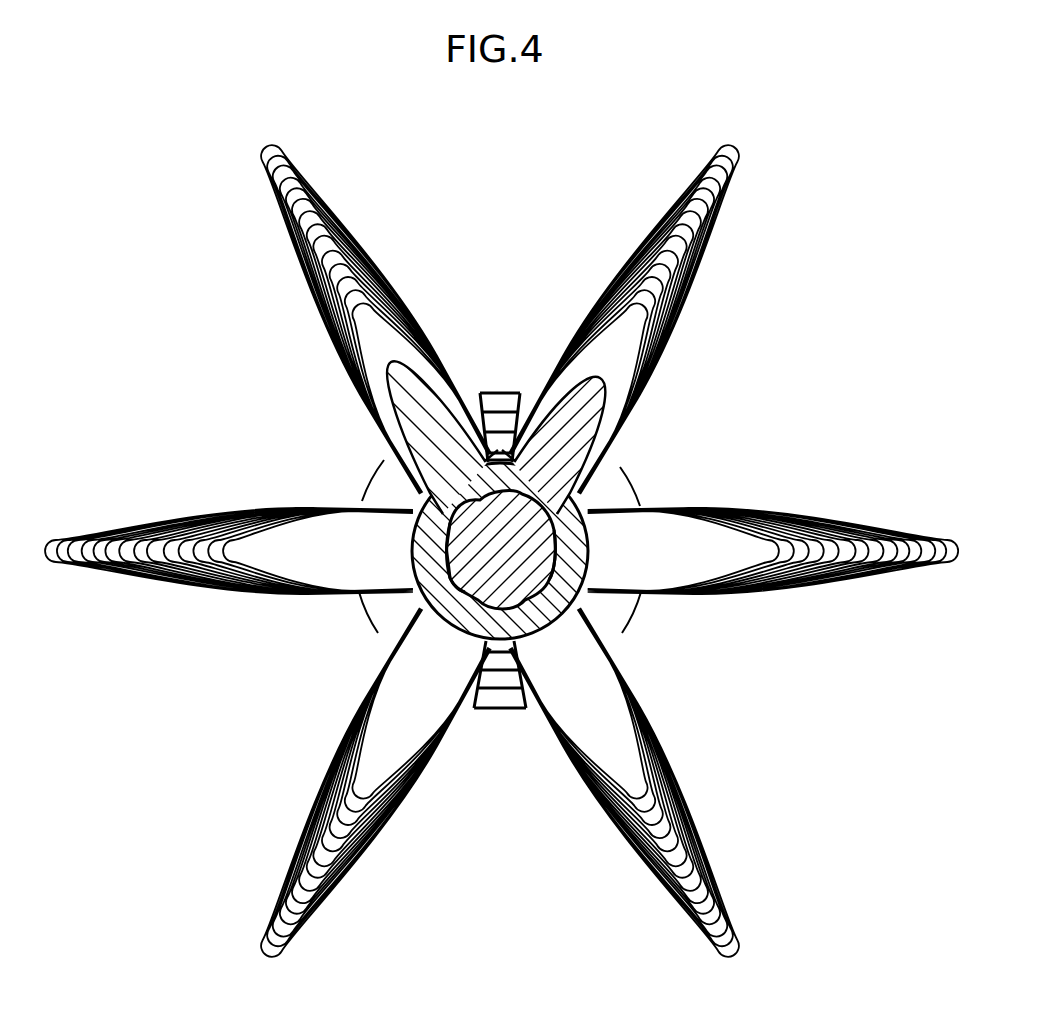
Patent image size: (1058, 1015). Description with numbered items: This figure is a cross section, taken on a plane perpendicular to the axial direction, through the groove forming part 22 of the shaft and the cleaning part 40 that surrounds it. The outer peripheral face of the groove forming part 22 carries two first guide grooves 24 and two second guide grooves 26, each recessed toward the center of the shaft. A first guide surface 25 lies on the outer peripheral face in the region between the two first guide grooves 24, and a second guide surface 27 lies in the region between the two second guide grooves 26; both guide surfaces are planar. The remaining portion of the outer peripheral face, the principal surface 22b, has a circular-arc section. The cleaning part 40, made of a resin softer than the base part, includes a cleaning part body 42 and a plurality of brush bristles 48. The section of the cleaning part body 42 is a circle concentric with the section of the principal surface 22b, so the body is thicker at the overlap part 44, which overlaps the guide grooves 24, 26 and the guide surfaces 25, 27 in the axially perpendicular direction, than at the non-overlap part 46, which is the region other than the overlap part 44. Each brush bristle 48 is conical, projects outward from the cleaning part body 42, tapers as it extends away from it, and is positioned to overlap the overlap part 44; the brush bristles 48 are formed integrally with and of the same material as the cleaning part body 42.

The groove forming part 22 is at (532, 568).
The principal surface 22b is at (497, 642).
The first guide grooves 24 is at (532, 507).
The first guide surface 25 is at (557, 548).
The second guide grooves 26 is at (482, 587).
The second guide surface 27 is at (447, 543).
The cleaning part 40 is at (423, 486).
The cleaning part body 42 is at (377, 478).
The overlap part 44 is at (538, 500).
The non-overlap part 46 is at (498, 487).
The brush bristles 48 is at (420, 407).